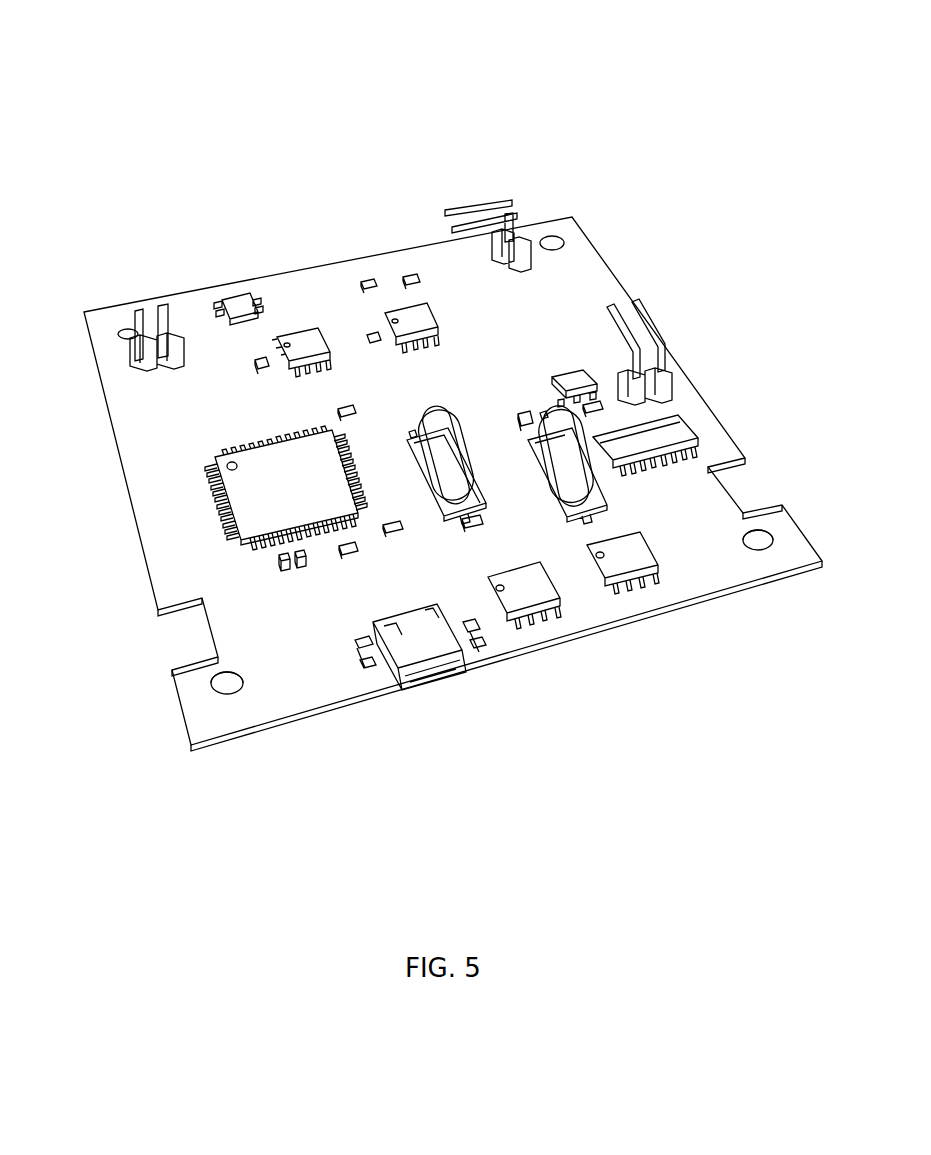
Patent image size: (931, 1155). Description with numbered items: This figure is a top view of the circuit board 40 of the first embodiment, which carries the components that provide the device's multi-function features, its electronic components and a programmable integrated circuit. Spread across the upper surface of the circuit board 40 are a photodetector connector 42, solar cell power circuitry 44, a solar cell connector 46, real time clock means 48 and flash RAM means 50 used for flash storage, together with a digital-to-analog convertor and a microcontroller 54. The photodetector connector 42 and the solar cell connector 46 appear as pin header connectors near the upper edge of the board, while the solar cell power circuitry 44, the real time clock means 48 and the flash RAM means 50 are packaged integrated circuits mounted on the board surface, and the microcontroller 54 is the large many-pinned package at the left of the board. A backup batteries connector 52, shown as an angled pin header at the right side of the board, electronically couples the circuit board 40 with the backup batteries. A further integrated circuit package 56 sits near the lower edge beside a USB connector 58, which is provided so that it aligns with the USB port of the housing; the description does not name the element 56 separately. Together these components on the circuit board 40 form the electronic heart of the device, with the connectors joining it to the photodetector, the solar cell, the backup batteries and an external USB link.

The circuit board 40 is at (413, 90).
The photodetector connector 42 is at (163, 307).
The solar cell power circuitry 44 is at (317, 328).
The solar cell connector 46 is at (508, 200).
The real time clock means 48 is at (690, 428).
The flash RAM means 50 is at (645, 595).
The backup batteries connector 52 is at (663, 332).
The microcontroller 54 is at (245, 480).
The integrated circuit 56 is at (540, 620).
The USB connector 58 is at (410, 688).